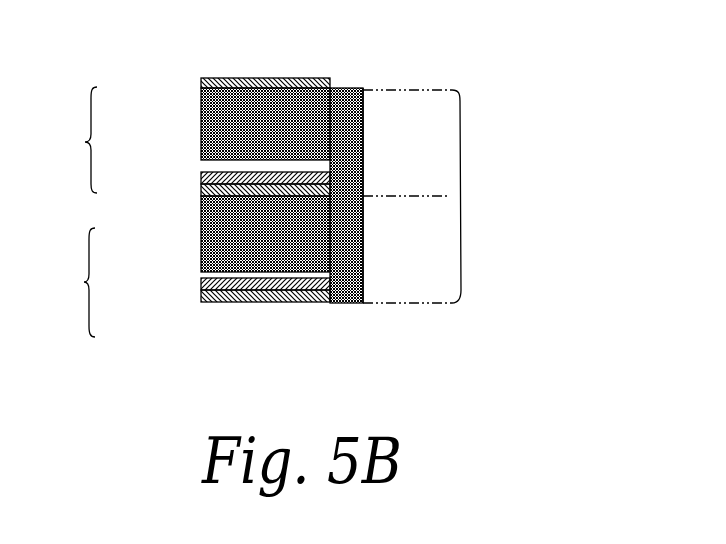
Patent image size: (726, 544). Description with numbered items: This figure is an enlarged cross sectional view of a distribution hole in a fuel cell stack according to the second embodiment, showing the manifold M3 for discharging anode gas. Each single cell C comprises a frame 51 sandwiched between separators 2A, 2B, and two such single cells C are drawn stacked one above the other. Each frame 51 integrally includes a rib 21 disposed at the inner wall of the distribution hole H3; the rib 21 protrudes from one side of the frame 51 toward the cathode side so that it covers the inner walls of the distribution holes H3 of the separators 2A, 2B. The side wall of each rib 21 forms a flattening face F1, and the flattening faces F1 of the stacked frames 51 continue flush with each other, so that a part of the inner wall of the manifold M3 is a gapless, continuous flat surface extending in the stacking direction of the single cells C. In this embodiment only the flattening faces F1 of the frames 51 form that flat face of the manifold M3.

The separator 2A is at (201, 85).
The frame 51 is at (212, 125).
The separator 2B is at (201, 177).
The rib 21 is at (330, 170).
The single cell C is at (75, 212).
The flattening face F1 is at (364, 129).
The distribution hole H3 is at (437, 142).
The manifold M3 is at (535, 120).